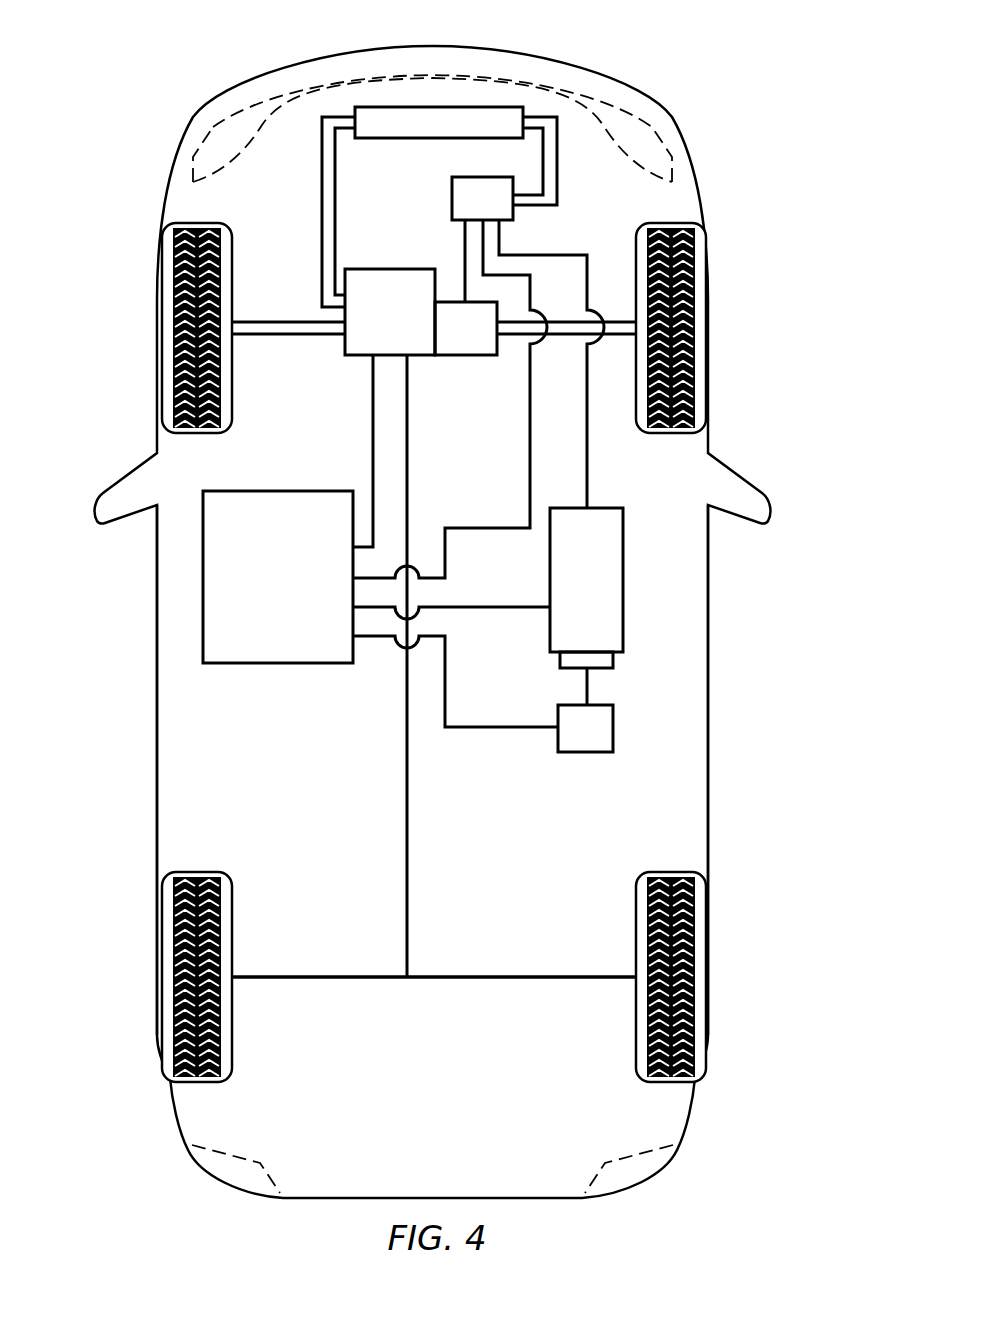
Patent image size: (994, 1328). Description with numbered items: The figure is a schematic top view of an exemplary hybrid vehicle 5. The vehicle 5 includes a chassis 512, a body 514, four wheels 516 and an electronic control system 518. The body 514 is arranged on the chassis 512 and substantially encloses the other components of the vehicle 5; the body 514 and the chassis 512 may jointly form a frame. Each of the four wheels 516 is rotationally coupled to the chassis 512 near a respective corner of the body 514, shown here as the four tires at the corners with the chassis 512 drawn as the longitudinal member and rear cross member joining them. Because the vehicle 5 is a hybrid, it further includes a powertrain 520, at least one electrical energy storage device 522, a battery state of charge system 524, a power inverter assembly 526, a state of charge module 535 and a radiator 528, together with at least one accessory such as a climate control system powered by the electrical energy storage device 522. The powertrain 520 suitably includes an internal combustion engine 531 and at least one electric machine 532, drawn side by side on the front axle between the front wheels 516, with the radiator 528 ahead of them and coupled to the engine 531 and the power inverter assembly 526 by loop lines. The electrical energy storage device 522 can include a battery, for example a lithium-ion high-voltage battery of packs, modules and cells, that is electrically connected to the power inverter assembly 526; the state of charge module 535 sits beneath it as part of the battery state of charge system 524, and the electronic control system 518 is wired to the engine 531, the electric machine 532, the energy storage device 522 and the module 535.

The vehicle 5 is at (660, 78).
The chassis 512 is at (407, 828).
The body 514 is at (157, 678).
The wheels 516 is at (157, 285).
The electronic control system (ECU) 518 is at (262, 588).
The powertrain 520 is at (433, 408).
The electrical energy storage device (ESD) 522 is at (571, 591).
The battery state of charge (SOC) system 524 is at (617, 638).
The power inverter assembly 526 is at (497, 208).
The radiator 528 is at (385, 107).
The internal combustion engine 531 is at (374, 324).
The electric machine 532 is at (436, 358).
The state of charge (SOC) module 535 is at (585, 728).